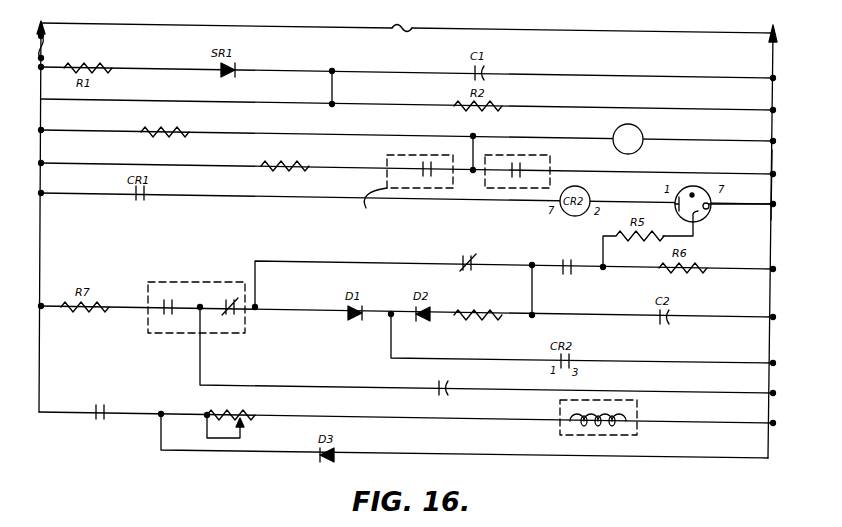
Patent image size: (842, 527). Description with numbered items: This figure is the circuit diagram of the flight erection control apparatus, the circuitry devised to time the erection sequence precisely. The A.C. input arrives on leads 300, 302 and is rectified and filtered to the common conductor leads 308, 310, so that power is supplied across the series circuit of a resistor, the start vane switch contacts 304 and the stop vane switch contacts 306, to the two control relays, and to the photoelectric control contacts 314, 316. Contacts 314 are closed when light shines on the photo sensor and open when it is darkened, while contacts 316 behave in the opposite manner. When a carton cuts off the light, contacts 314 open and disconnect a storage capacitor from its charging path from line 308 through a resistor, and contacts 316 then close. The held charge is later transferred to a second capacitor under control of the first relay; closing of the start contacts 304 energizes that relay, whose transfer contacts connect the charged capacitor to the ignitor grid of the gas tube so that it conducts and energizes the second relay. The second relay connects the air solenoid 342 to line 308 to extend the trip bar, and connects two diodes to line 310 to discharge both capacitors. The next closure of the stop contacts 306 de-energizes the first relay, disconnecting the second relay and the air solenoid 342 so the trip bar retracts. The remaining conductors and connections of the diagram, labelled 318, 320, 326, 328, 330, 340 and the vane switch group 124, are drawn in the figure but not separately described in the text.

The lead 300 is at (44, 22).
The lead 302 is at (780, 28).
The start vane switch contacts 304 is at (422, 168).
The stop vane switch contacts 306 is at (520, 190).
The common conductor lead 308 is at (41, 147).
The common conductor lead 310 is at (772, 186).
The photoelectric control contacts 314 is at (165, 300).
The photoelectric control contacts 316 is at (235, 302).
The circuit line 318 is at (305, 366).
The circuit line 320 is at (370, 262).
The circuit line 326 is at (216, 166).
The junction conductor 328 is at (472, 150).
The relay CR1 coil line 330 is at (554, 136).
The circuit line 340 is at (384, 417).
The air solenoid 342 is at (627, 414).
The vane switch 124 is at (461, 186).